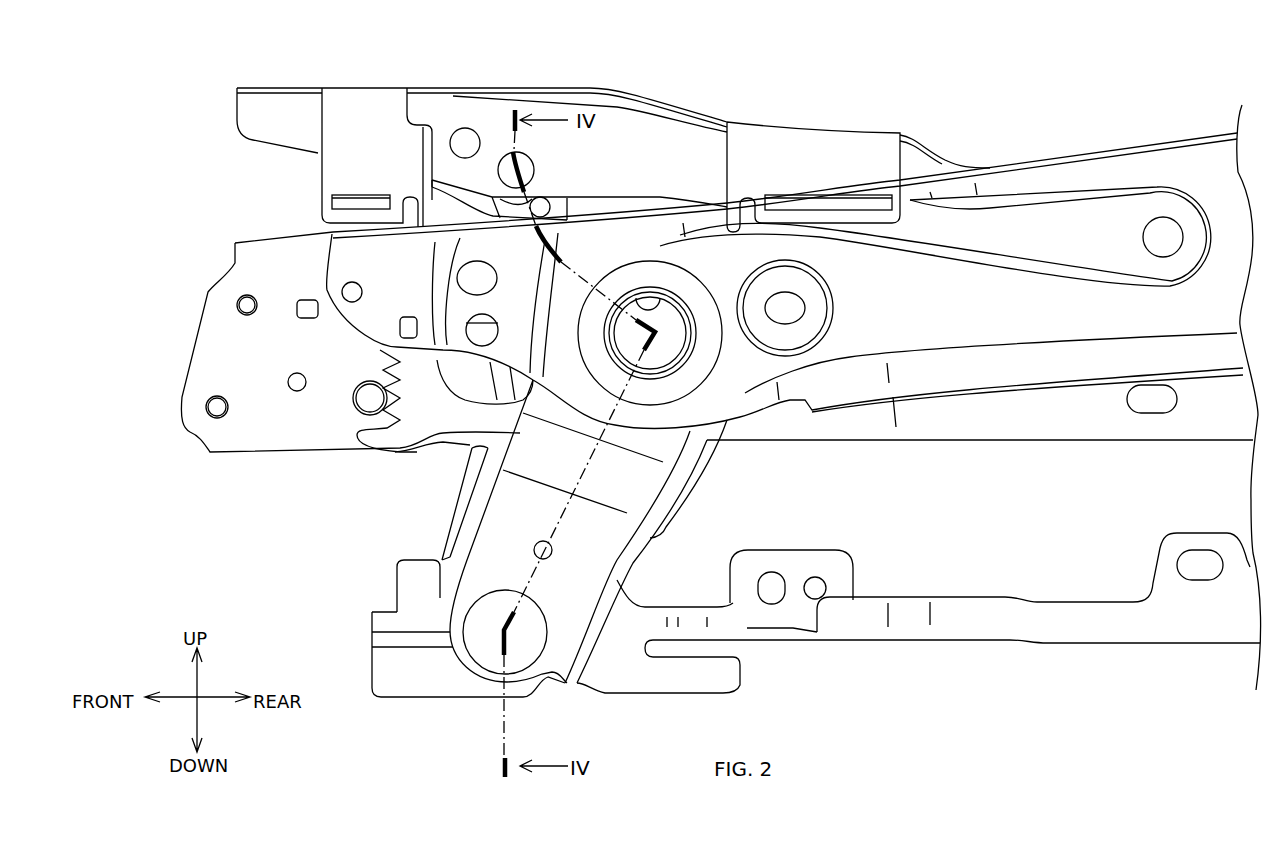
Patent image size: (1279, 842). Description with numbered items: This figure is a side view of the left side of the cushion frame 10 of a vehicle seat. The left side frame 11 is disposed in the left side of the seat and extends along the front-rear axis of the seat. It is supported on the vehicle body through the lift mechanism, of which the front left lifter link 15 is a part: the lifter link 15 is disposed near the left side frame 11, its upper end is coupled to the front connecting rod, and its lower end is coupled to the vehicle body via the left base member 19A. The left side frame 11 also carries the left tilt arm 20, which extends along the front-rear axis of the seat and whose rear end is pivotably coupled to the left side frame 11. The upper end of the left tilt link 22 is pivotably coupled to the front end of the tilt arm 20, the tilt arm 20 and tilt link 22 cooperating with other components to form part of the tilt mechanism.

The cushion frame 10 is at (945, 107).
The left side frame 11 is at (1100, 151).
The front left lifter link 15 is at (453, 503).
The left base member 19A is at (850, 640).
The left tilt arm 20 is at (484, 90).
The left tilt link 22 is at (432, 185).